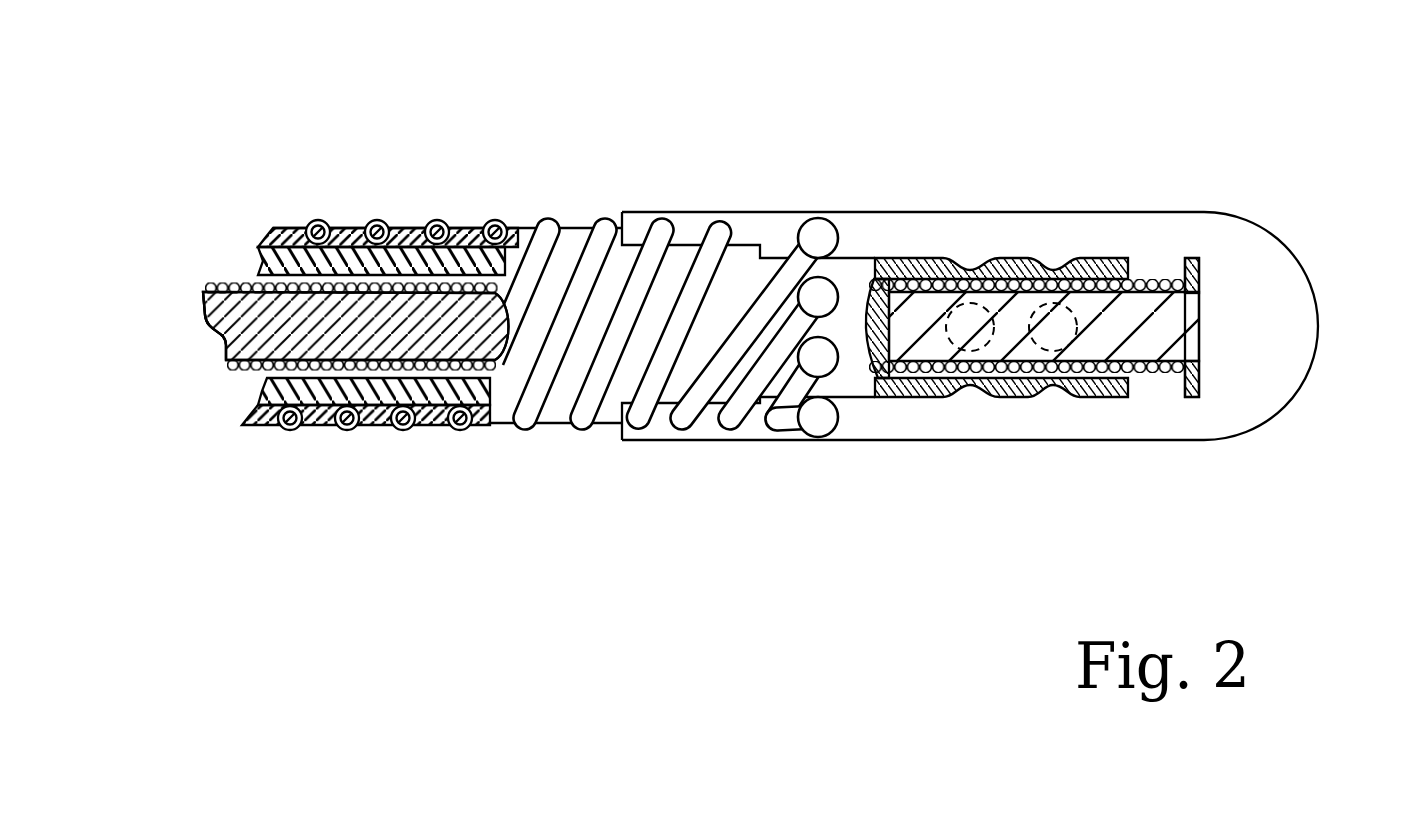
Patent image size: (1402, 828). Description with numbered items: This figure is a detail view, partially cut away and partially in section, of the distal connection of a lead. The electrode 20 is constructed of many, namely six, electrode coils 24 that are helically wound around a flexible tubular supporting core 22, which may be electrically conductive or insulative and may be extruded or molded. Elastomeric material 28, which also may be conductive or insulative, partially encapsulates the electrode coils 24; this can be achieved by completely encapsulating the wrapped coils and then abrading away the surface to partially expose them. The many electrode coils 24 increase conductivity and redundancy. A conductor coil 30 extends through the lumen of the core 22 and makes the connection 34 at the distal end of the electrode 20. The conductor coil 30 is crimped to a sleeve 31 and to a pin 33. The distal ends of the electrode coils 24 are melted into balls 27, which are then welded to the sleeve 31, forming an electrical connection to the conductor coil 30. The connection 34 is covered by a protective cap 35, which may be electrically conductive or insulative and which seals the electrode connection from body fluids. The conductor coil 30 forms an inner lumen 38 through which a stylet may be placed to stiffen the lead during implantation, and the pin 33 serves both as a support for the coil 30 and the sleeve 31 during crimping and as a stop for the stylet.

The electrode 20 is at (311, 464).
The flexible tubular supporting core 22 is at (258, 262).
The electrode coils 24 is at (378, 221).
The balls 27 is at (798, 224).
The elastomeric material 28 is at (370, 427).
The conductor coil 30 is at (220, 293).
The sleeve 31 is at (1025, 261).
The pin 33 is at (1200, 263).
The connection 34 is at (860, 458).
The protective cap 35 is at (1300, 385).
The inner lumen 38 is at (208, 333).